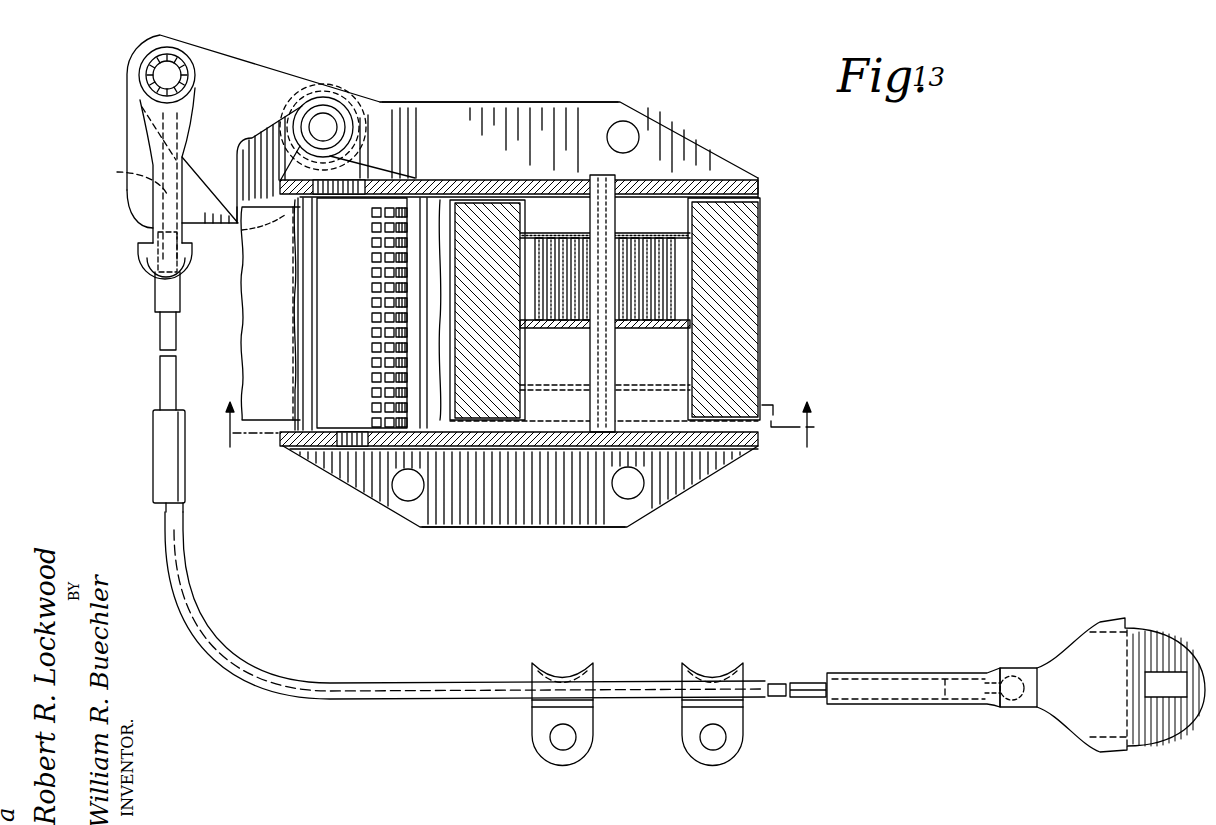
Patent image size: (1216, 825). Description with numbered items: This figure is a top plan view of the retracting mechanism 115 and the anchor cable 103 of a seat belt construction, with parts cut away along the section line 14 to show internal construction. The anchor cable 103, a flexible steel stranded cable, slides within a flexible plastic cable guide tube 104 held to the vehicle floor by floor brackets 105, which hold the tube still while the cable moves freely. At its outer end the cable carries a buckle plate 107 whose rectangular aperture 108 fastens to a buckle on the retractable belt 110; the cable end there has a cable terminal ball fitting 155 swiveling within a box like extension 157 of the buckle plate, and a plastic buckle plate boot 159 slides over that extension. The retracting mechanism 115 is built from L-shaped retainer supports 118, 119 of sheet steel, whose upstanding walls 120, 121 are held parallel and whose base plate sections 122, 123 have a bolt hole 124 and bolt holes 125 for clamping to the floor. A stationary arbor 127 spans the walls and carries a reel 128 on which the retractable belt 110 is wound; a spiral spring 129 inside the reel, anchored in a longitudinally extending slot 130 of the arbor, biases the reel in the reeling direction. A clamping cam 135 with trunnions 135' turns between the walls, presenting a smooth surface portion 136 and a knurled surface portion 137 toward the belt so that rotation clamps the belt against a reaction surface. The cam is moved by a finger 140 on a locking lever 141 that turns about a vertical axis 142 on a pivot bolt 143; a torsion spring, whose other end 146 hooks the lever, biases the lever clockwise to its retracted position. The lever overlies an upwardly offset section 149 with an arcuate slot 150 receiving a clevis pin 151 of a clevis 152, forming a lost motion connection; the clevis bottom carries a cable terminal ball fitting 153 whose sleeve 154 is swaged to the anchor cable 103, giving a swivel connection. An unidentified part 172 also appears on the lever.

The section line 14- 14 is at (520, 424).
The anchor cable 103 is at (798, 698).
The cable guide tube 104 is at (434, 681).
The floor brackets 105 is at (682, 672).
The buckle plate 107 is at (1143, 636).
The rectangular aperture 108 is at (1165, 692).
The retractable belt 110 is at (246, 350).
The retracting mechanism 115 is at (796, 163).
The L-shaped retainer support 118 is at (745, 155).
The L-shaped retainer support 119 is at (748, 468).
The upstanding wall 120 is at (672, 178).
The upstanding wall 121 is at (694, 448).
The base plate section 122 is at (547, 108).
The base plate section 123 is at (570, 520).
The bolt hole 124 is at (627, 130).
The bolt holes 125 is at (424, 485).
The stationary arbor 127 is at (620, 408).
The reel 128 is at (760, 196).
The spiral spring 129 is at (656, 233).
The longitudinally extending slot 130 is at (579, 180).
The clamping cam 135 is at (353, 166).
The trunnions 135' is at (340, 476).
The smooth surface portion 136 is at (327, 268).
The knurled surface portion 137 is at (375, 357).
The finger 140 is at (250, 236).
The locking lever 141 is at (252, 66).
The vertical axis 142 is at (320, 124).
The pivot bolt 143 is at (336, 118).
The other end of torsion spring 146 is at (326, 164).
The upwardly offset section 149 is at (140, 200).
The arcuate slot 150 is at (140, 137).
The clevis pin 151 is at (160, 72).
The clevis 152 is at (146, 104).
The cable terminal ball fitting 153 is at (145, 249).
The sleeve 154 is at (155, 290).
The cable terminal ball fitting 155 is at (1012, 677).
The box like extension 157 is at (1031, 667).
The buckle plate boot 159 is at (990, 672).
The lever cam surface 172 is at (118, 178).